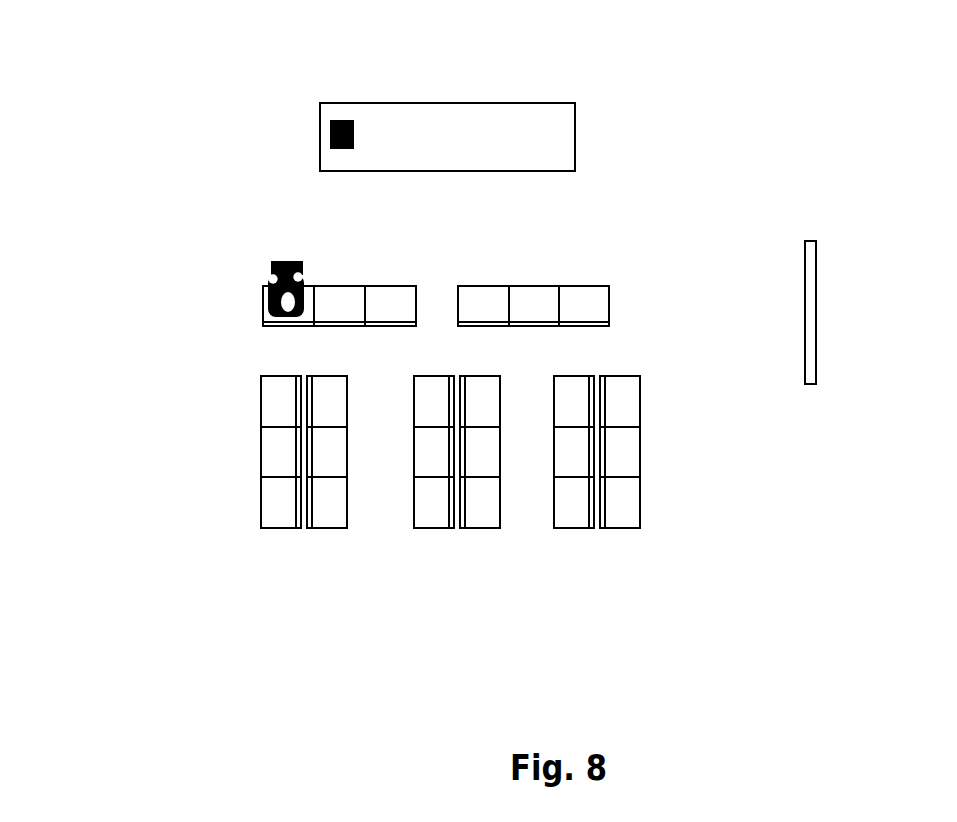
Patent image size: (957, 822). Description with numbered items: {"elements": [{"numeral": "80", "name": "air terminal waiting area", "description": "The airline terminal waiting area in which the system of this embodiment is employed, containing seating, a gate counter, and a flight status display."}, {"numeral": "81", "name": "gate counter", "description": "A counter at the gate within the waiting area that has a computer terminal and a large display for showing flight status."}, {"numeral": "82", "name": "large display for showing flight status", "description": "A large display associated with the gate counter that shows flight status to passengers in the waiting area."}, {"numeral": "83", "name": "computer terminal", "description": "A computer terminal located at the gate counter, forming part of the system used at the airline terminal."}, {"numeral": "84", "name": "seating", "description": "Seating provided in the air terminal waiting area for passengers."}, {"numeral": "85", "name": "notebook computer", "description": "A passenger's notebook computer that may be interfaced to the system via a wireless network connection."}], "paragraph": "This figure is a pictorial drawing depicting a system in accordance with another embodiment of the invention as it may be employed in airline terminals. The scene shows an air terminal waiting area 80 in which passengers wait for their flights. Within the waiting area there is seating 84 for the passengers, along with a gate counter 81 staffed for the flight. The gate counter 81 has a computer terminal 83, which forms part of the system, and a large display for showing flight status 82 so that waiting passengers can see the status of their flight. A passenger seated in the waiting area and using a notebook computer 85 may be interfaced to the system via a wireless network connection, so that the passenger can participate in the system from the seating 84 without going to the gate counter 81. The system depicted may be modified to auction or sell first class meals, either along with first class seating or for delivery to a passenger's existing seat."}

The retail store layout 80 is at (162, 243).
The checkout counter area 81 is at (577, 102).
The wall display 82 is at (817, 247).
The point of sale terminal 83 is at (355, 115).
The shelving aisles 84 is at (419, 535).
The shopper with cart 85 is at (303, 257).